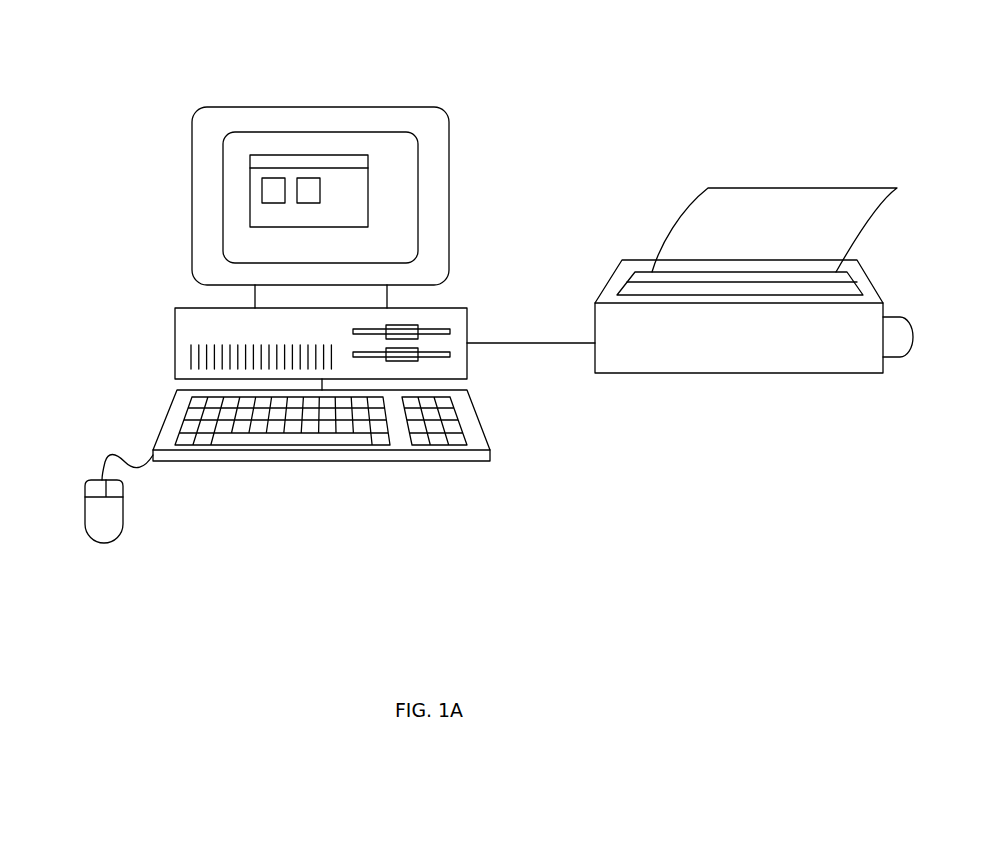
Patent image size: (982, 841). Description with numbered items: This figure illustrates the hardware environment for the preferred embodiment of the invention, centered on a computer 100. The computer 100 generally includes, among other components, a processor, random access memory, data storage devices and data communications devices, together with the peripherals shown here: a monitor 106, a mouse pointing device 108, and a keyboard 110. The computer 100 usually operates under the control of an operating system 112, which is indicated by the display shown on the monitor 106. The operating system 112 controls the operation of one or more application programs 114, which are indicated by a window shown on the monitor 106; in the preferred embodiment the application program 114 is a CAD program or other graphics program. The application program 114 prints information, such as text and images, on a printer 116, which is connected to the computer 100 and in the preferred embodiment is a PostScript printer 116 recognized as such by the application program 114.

The computer 100 is at (402, 97).
The monitor 106 is at (192, 212).
The mouse pointing device 108 is at (85, 532).
The keyboard 110 is at (448, 460).
The operating system 112 is at (240, 155).
The application program 114 is at (273, 155).
The printer 116 is at (677, 373).